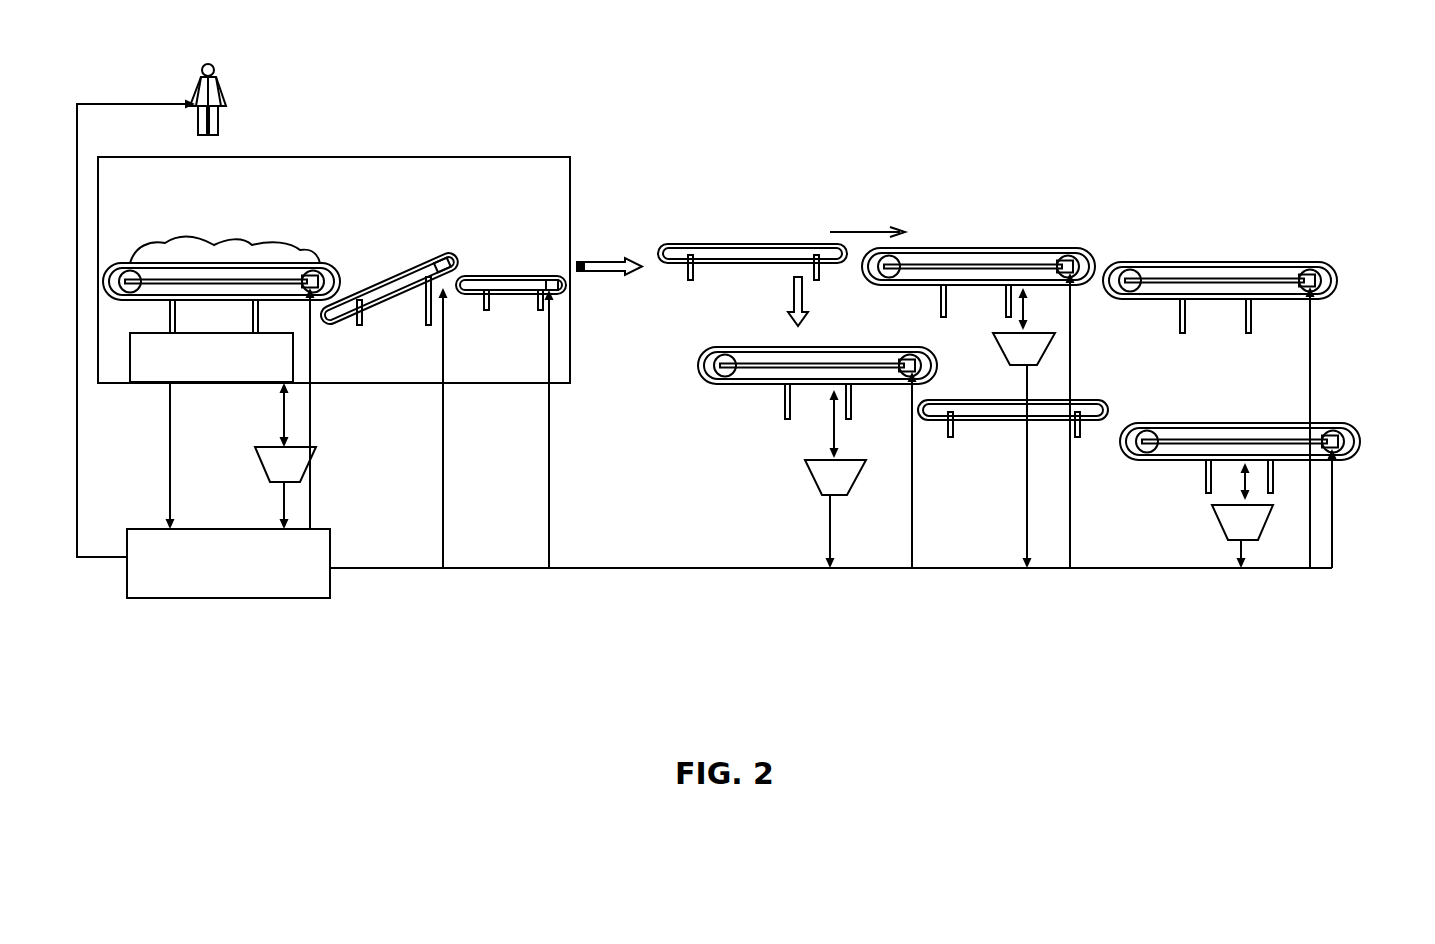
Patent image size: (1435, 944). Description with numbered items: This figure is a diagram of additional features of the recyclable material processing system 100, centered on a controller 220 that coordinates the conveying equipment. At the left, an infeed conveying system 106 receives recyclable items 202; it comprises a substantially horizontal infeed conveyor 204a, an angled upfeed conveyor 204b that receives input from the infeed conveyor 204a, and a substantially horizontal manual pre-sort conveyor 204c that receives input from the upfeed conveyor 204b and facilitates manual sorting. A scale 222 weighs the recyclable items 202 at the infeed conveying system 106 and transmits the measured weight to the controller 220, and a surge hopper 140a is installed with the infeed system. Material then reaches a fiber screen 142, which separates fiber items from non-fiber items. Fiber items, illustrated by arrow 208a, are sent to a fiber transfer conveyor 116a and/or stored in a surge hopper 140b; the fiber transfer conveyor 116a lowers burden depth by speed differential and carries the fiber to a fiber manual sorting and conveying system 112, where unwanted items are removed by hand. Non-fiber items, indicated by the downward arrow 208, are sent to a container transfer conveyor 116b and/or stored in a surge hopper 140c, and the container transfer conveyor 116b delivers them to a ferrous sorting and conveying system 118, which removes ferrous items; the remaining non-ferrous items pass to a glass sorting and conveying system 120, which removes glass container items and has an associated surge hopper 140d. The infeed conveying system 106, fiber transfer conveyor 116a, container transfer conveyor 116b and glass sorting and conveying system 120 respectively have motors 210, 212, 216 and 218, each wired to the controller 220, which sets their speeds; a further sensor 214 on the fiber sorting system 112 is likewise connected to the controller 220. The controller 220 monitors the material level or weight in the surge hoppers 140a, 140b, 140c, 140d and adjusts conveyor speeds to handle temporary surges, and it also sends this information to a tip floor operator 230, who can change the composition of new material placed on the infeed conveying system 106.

The system 100 is at (732, 99).
The infeed conveying system 106 is at (540, 157).
The fiber manual sorting and conveying system 112 is at (1224, 256).
The fiber transfer conveyor 116a is at (957, 240).
The container transfer conveyor 116b is at (777, 436).
The ferrous sorting and conveying system 118 is at (998, 432).
The glass sorting and conveying system 120 is at (1224, 416).
The surge hopper 140a is at (310, 452).
The surge hopper 140b is at (1069, 441).
The surge hopper 140c is at (843, 497).
The surge hopper 140d is at (1265, 530).
The fiber screen 142 is at (696, 241).
The recyclable items 202 is at (229, 243).
The infeed conveyor 204a is at (212, 258).
The upfeed conveyor 204b is at (404, 262).
The manual pre-sort conveyor 204c is at (512, 266).
The flow arrow 208 is at (788, 318).
The arrow 208a is at (870, 226).
The motor 210 is at (321, 274).
The motor 212 is at (1076, 262).
The sensor 214 is at (1318, 273).
The motor 216 is at (920, 356).
The motor 218 is at (1345, 436).
The controller 220 is at (305, 599).
The scale 222 is at (211, 357).
The tip floor operator 230 is at (220, 84).